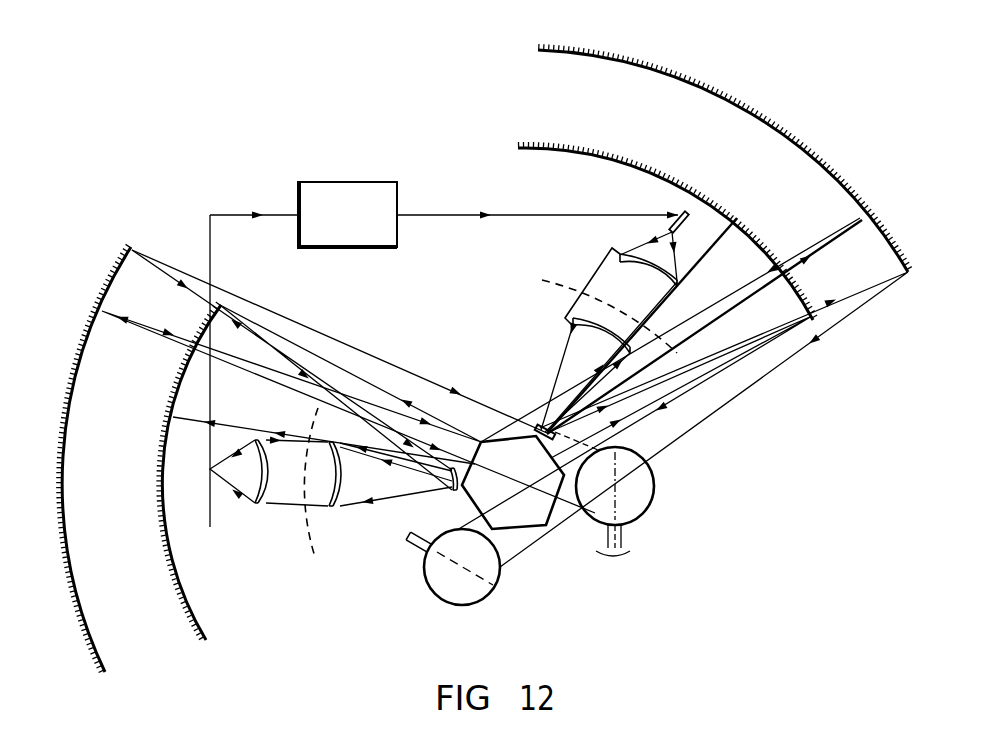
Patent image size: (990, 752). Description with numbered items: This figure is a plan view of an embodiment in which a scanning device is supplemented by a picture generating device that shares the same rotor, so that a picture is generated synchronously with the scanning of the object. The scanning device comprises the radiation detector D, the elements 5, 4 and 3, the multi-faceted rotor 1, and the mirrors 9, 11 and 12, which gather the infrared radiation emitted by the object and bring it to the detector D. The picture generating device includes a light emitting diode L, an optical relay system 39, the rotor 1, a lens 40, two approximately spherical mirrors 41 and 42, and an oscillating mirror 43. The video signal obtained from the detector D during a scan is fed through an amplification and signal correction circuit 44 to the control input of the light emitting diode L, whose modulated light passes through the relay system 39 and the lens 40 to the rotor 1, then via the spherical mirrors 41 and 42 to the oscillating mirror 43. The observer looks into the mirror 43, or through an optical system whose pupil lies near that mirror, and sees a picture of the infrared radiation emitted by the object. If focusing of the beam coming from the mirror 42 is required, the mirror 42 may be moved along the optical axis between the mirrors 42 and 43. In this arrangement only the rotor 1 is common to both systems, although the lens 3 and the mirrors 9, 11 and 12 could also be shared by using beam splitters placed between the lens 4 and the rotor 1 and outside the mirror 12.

The rotor 1 is at (523, 518).
The lens 3 is at (448, 488).
The lens 4 is at (336, 508).
The scanning device element 5 is at (254, 505).
The mirror 9 is at (193, 607).
The mirror 11 is at (100, 657).
The mirror 12 is at (649, 508).
The optical relay system 39 is at (588, 286).
The lens 40 is at (540, 428).
The spherical mirror 41 is at (817, 318).
The spherical mirror 42 is at (898, 250).
The oscillating mirror 43 is at (468, 607).
The amplification and signal correction circuit 44 is at (352, 182).
The radiation detector D is at (228, 385).
The light emitting diode L is at (682, 213).